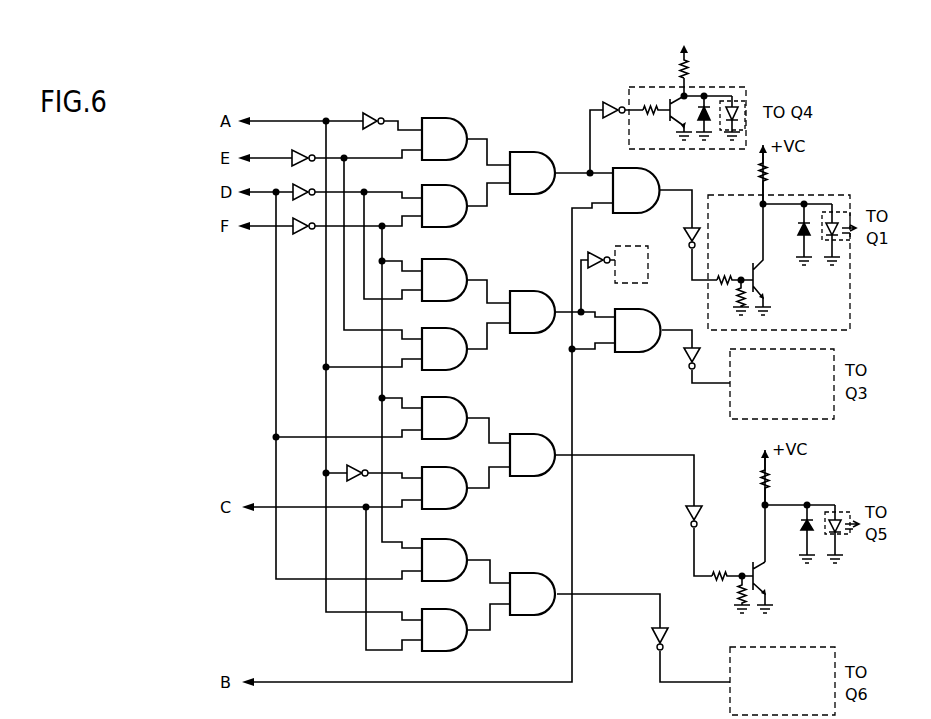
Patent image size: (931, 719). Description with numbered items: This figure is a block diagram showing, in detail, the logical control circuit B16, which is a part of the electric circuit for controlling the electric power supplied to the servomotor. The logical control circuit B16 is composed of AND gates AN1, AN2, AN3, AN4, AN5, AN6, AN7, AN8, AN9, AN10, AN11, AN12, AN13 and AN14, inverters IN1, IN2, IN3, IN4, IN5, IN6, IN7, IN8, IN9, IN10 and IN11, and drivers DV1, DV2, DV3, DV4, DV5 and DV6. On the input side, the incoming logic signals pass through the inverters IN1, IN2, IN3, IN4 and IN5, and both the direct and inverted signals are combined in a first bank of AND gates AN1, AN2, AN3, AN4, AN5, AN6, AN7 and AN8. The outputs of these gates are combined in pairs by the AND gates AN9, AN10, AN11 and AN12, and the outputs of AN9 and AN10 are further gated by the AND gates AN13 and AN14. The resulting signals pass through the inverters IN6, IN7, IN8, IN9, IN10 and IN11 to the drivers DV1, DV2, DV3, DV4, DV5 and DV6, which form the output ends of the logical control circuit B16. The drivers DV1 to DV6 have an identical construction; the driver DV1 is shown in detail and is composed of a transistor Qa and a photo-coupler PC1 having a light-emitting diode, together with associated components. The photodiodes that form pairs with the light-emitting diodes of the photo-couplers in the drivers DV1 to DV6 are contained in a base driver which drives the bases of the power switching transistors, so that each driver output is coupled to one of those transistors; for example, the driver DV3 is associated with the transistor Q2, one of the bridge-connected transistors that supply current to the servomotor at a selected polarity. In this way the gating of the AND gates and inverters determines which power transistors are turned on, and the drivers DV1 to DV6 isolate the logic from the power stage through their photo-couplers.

The inverter IN1 is at (378, 103).
The inverter IN2 is at (300, 151).
The inverter IN3 is at (293, 185).
The inverter IN4 is at (299, 235).
The inverter IN5 is at (365, 461).
The inverter IN6 is at (687, 235).
The inverter IN7 is at (688, 363).
The inverter IN8 is at (684, 517).
The inverter IN9 is at (668, 636).
The inverter IN10 is at (620, 91).
The inverter IN11 is at (590, 250).
The AND gate AN1 is at (460, 102).
The AND gate AN2 is at (462, 184).
The AND gate AN3 is at (445, 262).
The AND gate AN4 is at (471, 326).
The AND gate AN5 is at (447, 400).
The AND gate AN6 is at (435, 472).
The AND gate AN7 is at (448, 543).
The AND gate AN8 is at (435, 612).
The AND gate AN9 is at (553, 142).
The AND gate AN10 is at (552, 284).
The AND gate AN11 is at (548, 425).
The AND gate AN12 is at (556, 566).
The AND gate AN13 is at (659, 182).
The AND gate AN14 is at (661, 352).
The logical control circuit B16 is at (505, 103).
The driver DV1 is at (800, 196).
The driver DV2 is at (808, 351).
The driver DV3 is at (622, 248).
The driver DV4 is at (727, 86).
The driver DV5 is at (803, 500).
The driver DV6 is at (818, 647).
The photo-coupler PC1 is at (837, 243).
The transistor Qa is at (755, 259).
The transistor Q2 is at (645, 266).